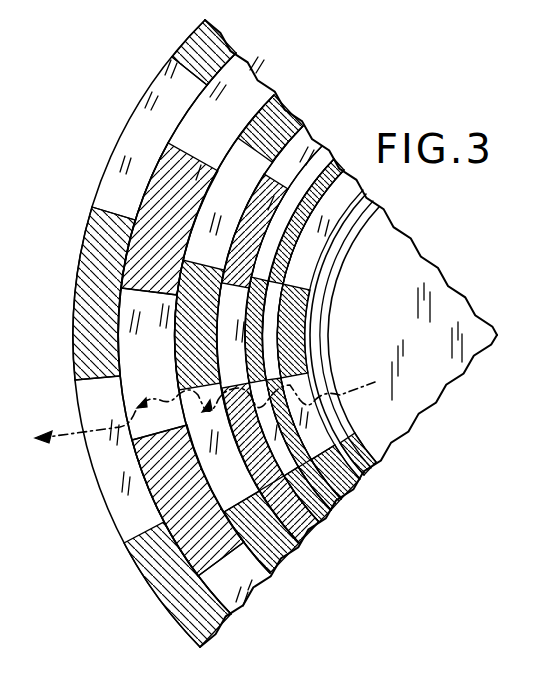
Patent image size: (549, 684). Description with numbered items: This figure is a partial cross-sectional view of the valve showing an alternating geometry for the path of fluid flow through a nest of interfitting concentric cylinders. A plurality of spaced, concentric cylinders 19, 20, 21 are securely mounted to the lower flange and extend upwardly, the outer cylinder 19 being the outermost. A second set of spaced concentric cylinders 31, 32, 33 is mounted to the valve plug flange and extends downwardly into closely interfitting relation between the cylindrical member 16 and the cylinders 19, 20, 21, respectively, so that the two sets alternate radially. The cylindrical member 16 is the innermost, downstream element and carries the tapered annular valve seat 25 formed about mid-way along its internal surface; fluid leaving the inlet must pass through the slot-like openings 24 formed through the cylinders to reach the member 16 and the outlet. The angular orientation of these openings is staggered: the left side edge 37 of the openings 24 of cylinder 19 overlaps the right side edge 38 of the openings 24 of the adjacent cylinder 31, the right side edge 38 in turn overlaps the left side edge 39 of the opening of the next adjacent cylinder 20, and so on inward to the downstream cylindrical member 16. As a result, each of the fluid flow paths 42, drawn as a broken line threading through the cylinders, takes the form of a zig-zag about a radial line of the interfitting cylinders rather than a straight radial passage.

The cylindrical member 16 is at (352, 487).
The outer cylinder 19 is at (82, 286).
The concentric cylinder 20 is at (280, 560).
The concentric cylinder 21 is at (330, 513).
The slot-like openings 24 is at (106, 208).
The tapered annular valve seat 25 is at (325, 285).
The concentric cylinder 31 is at (217, 557).
The concentric cylinder 32 is at (293, 527).
The concentric cylinder 33 is at (292, 441).
The left side edge 37 is at (78, 384).
The right side edge 38 is at (153, 433).
The left side edge 39 is at (174, 393).
The fluid flow paths 42 is at (46, 447).